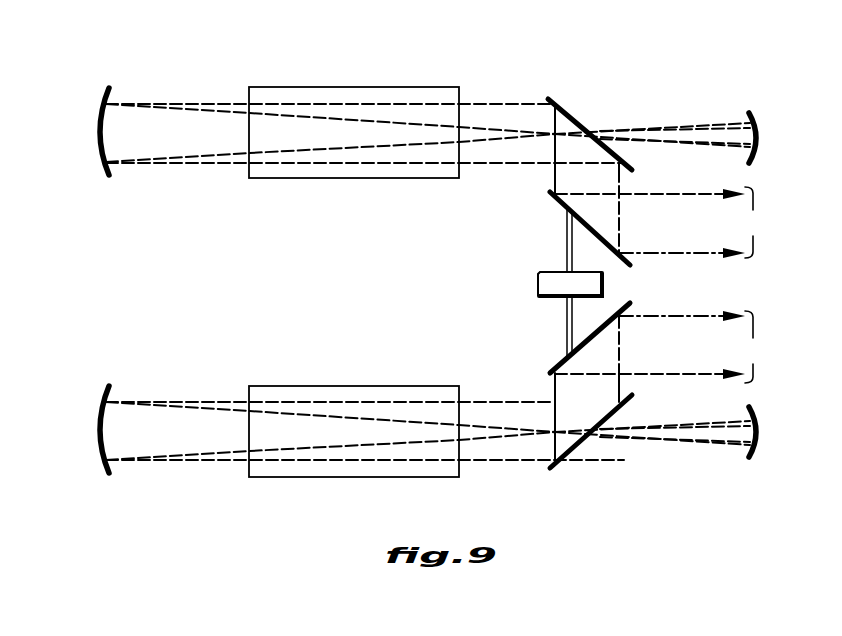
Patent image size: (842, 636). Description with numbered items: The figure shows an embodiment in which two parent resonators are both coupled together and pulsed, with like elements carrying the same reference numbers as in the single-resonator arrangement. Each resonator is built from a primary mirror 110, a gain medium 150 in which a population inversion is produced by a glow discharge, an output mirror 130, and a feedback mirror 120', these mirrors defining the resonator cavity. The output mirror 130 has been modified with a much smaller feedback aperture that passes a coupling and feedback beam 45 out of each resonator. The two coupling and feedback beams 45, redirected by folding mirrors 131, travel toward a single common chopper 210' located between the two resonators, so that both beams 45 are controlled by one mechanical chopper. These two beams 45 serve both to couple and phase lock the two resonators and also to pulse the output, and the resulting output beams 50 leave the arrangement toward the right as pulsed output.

The primary mirror 110 is at (107, 88).
The gain medium 150 is at (317, 87).
The output mirror 130 is at (575, 112).
The feedback mirror 120' is at (778, 277).
The folding mirror 131 is at (557, 199).
The coupling and feedback beam 45 is at (568, 242).
The common chopper 210' is at (534, 281).
The output beams 50 is at (752, 285).